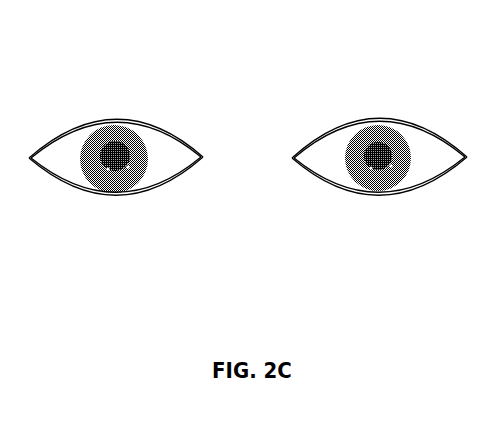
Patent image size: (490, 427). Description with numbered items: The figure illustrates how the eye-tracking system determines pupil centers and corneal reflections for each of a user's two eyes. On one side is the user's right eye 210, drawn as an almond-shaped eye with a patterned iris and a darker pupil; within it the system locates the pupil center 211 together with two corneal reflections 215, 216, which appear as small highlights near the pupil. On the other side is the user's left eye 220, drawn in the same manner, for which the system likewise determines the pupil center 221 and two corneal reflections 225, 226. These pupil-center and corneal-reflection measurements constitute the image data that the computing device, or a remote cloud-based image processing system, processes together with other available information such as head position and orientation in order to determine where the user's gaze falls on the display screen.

The right eye 210 is at (126, 143).
The pupil center 211 is at (85, 173).
The corneal reflection 215 is at (97, 195).
The corneal reflection 216 is at (137, 187).
The left eye 220 is at (365, 143).
The pupil center 221 is at (348, 173).
The corneal reflection 225 is at (360, 193).
The corneal reflection 226 is at (402, 187).